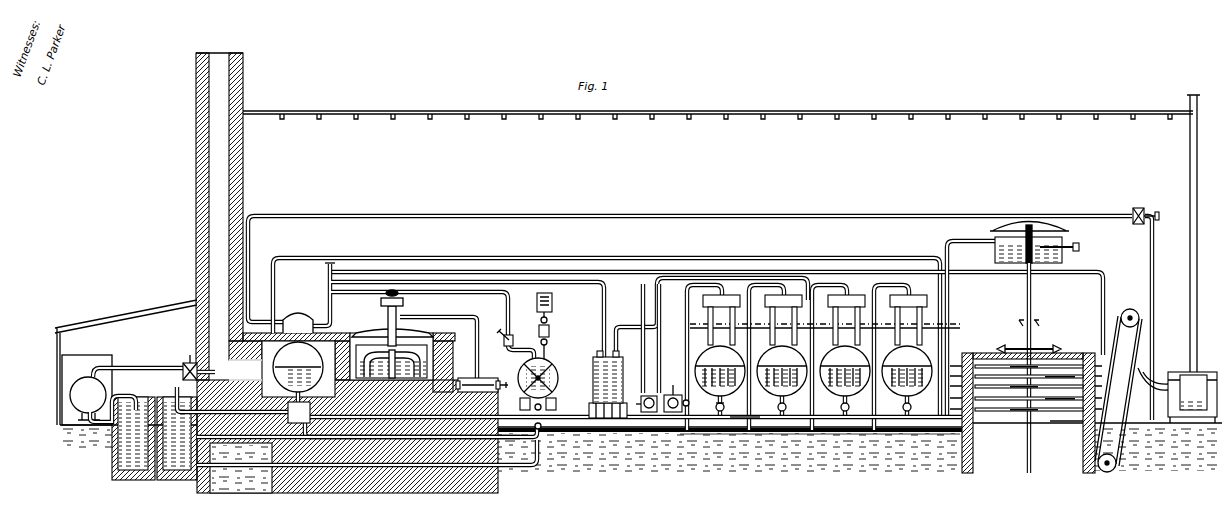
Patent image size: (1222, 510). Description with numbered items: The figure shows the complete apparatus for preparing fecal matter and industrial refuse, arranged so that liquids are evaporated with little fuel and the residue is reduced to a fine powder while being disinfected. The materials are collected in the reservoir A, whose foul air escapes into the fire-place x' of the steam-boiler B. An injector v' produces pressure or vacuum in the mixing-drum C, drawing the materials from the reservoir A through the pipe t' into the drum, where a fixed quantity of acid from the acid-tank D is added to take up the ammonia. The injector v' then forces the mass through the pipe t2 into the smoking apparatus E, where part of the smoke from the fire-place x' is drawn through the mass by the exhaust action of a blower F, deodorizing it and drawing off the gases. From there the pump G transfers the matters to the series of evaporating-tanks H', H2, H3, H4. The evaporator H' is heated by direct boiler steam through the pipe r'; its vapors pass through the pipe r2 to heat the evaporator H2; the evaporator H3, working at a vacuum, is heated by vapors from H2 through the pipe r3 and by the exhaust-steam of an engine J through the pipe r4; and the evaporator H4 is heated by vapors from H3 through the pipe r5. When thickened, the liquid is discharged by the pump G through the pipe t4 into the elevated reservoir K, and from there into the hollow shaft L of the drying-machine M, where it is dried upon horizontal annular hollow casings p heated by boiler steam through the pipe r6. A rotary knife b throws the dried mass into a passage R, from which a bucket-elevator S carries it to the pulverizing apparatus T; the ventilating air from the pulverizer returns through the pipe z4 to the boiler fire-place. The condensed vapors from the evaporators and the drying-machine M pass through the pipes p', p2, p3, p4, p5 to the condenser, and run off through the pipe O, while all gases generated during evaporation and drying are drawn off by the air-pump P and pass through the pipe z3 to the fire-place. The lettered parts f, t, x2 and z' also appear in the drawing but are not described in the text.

The reservoir A is at (154, 438).
The steam-boiler B is at (298, 352).
The mixing-drum C is at (542, 393).
The acid-tank D is at (551, 326).
The smoking apparatus E is at (392, 334).
The blower F is at (482, 375).
The pump G is at (604, 384).
The evaporator H' is at (907, 345).
The evaporator H2 is at (845, 345).
The evaporator H3 is at (782, 345).
The evaporator H4 is at (720, 345).
The engine J is at (646, 396).
The elevated reservoir K is at (1028, 243).
The hollow shaft L is at (1029, 390).
The drying-machine M is at (1068, 352).
The pipe O is at (1146, 205).
The air-pump P is at (676, 386).
The passage R is at (1026, 413).
The bucket-elevator S is at (1131, 390).
The pulverizing apparatus T is at (1192, 397).
The rotary knife b is at (1029, 376).
The shaft f is at (1029, 368).
The hollow casings p is at (1066, 418).
The pipe p' is at (897, 402).
The pipe p2 is at (835, 401).
The pipe p3 is at (773, 401).
The pipe p4 is at (711, 401).
The pipe p5 is at (818, 437).
The pipe r' is at (606, 330).
The pipe r2 is at (779, 365).
The pipe r3 is at (842, 365).
The pipe r4 is at (712, 317).
The pipe r5 is at (716, 268).
The pipe r6 is at (1110, 316).
The pipe t is at (367, 464).
The pipe t' is at (636, 410).
The pipe t2 is at (745, 409).
The pipe t4 is at (949, 303).
The injector v' is at (512, 336).
The fire-place x' is at (299, 412).
The coil x2 is at (392, 371).
The pipe z' is at (222, 396).
The pipe z3 is at (596, 440).
The pipe z4 is at (512, 216).